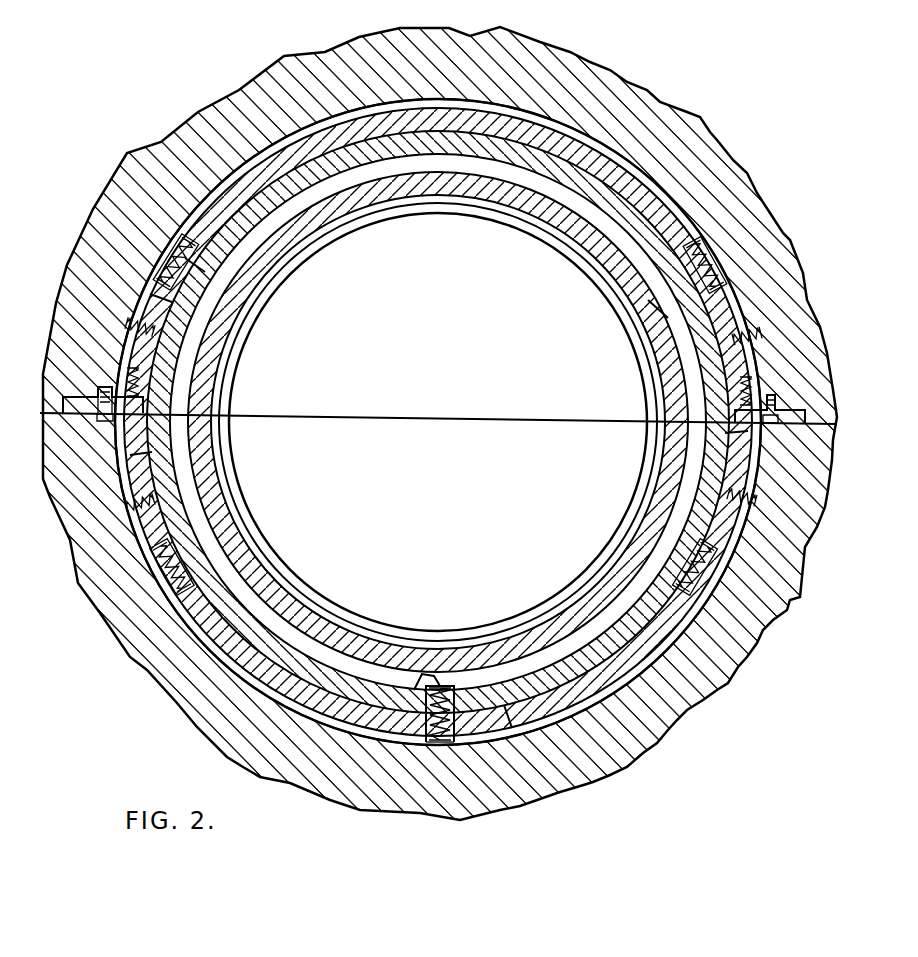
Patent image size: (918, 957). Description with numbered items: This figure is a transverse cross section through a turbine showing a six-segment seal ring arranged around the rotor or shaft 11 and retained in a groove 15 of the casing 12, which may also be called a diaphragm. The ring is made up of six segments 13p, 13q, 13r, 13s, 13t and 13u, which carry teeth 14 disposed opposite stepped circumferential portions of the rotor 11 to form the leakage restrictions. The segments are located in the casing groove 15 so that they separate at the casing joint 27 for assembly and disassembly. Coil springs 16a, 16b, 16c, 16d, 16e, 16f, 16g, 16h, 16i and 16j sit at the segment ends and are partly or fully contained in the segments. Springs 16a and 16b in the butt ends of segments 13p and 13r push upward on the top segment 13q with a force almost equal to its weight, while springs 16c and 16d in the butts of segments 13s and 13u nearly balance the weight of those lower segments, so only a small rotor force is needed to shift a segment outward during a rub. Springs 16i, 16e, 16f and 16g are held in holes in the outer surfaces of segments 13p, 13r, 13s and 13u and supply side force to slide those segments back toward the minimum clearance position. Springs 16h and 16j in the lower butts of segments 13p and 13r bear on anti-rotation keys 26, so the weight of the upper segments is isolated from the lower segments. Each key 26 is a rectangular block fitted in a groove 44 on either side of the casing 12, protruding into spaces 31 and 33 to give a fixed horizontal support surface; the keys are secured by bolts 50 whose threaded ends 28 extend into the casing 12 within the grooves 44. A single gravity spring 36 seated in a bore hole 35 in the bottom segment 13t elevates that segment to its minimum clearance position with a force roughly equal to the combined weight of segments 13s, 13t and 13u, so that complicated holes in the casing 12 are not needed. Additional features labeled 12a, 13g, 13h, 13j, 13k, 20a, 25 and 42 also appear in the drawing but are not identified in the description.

The rotor 11 is at (421, 391).
The casing 12 is at (355, 52).
The housing bore surface 12a is at (444, 130).
The ring pocket 13g is at (192, 265).
The inner sleeve ring 13h is at (473, 183).
The inner ring band 13j is at (577, 200).
The sleeve inner surface 13k is at (350, 150).
The seal ring segment 13p is at (160, 300).
The seal ring segment 13q is at (523, 130).
The seal ring segment 13r is at (655, 312).
The seal ring segment 13s is at (733, 431).
The seal ring segment 13t is at (512, 718).
The seal ring segment 13u is at (142, 455).
The teeth 14 is at (592, 262).
The groove 15 is at (633, 160).
The coil spring 16a is at (172, 235).
The coil spring 16b is at (722, 252).
The coil spring 16c is at (700, 560).
The coil spring 16d is at (178, 562).
The coil spring 16e is at (737, 338).
The coil spring 16f is at (742, 497).
The coil spring 16g is at (152, 503).
The coil spring 16h is at (142, 383).
The coil spring 16i is at (152, 329).
The coil spring 16j is at (742, 387).
The housing inner wall 20a is at (655, 172).
The clearance ring 25 is at (612, 160).
The anti-rotation key 26 is at (108, 398).
The casing joint 27 is at (566, 420).
The threaded screw end 28 is at (107, 386).
The space 31 is at (733, 405).
The space 33 is at (142, 405).
The bore hole 35 is at (440, 688).
The gravity spring 36 is at (442, 742).
The bottom spring 42 is at (452, 688).
The groove 44 is at (782, 409).
The mounting bolt 50 is at (112, 414).